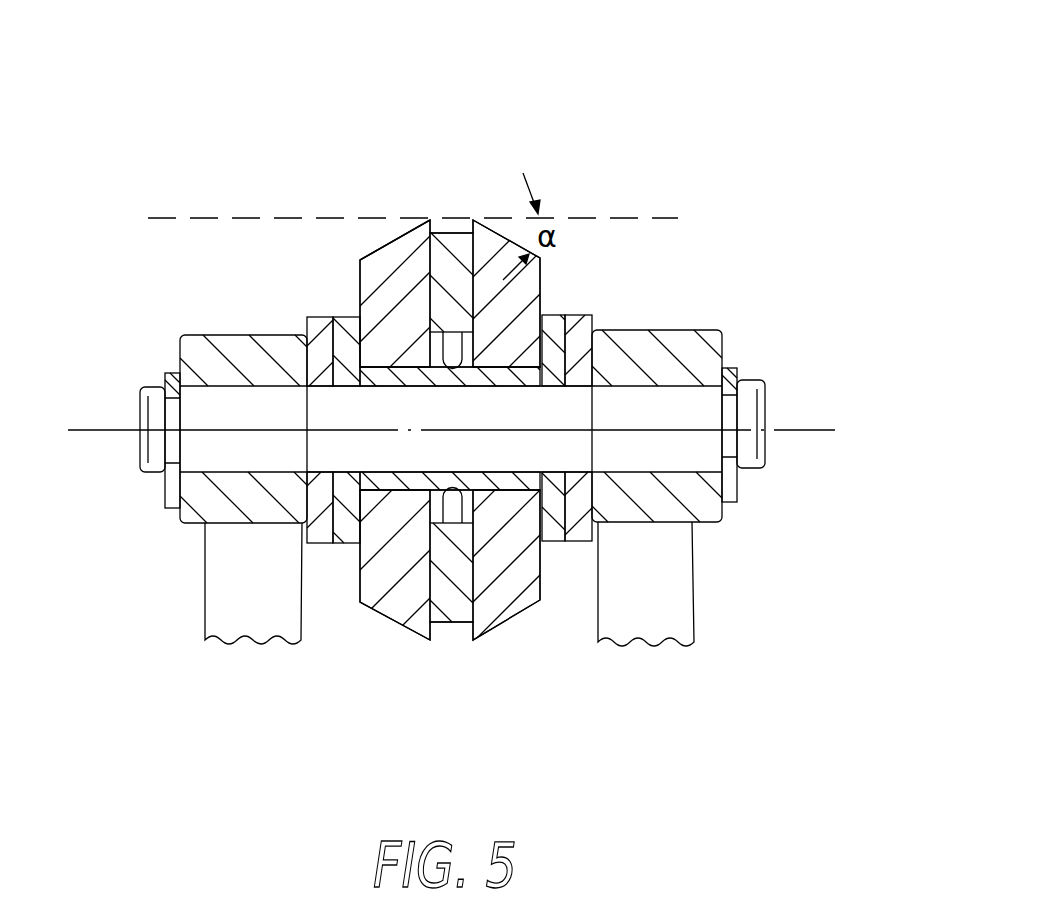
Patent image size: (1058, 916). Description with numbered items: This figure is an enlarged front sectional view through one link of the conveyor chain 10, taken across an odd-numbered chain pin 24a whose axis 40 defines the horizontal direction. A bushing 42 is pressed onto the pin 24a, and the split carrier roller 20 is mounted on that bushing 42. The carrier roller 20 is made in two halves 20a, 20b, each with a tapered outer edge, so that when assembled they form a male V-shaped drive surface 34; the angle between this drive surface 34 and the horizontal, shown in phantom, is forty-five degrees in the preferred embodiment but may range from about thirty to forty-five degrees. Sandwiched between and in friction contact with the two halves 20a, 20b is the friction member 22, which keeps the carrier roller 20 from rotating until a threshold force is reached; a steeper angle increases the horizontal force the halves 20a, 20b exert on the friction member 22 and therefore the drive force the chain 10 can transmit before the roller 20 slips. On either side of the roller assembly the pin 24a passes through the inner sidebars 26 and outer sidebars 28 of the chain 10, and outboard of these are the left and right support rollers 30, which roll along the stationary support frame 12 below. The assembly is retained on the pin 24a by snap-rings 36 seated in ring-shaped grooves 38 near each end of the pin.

The chain 10 is at (656, 95).
The support frame 12 is at (677, 595).
The carrier roller 20 is at (409, 194).
The carrier roller half 20a is at (366, 257).
The carrier roller half 20b is at (543, 270).
The friction member 22 is at (452, 612).
The odd-numbered chain pin 24a is at (141, 398).
The inner sidebar 26 is at (348, 543).
The outer sidebar 28 is at (320, 316).
The support roller 30 is at (195, 520).
The drive surface 34 is at (391, 242).
The snap-ring 36 is at (172, 373).
The ring-shaped groove 38 is at (150, 428).
The axis 40 is at (800, 428).
The bushing 42 is at (507, 373).